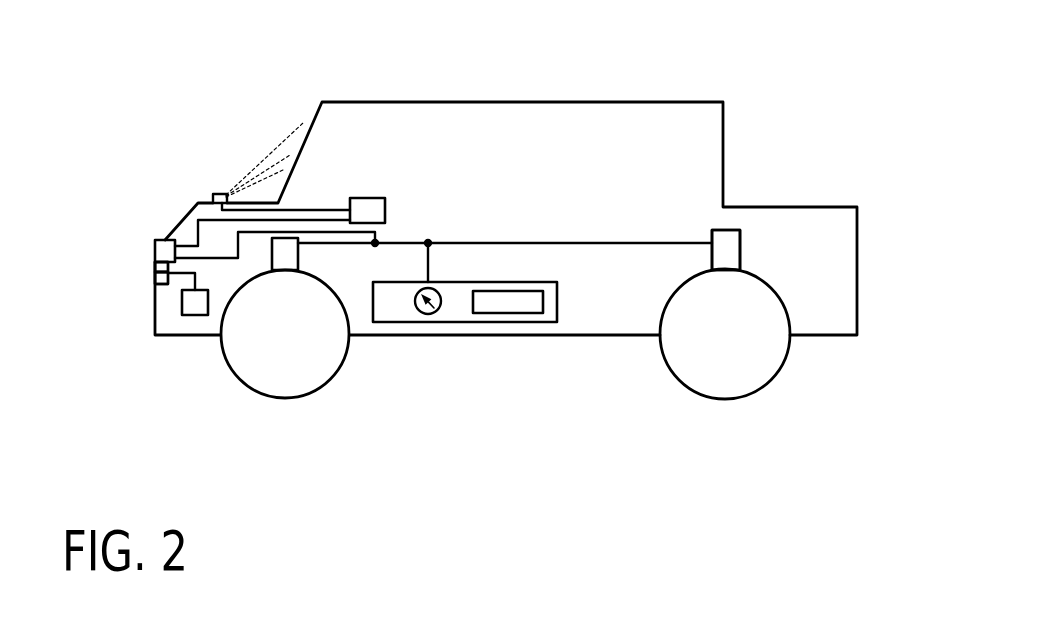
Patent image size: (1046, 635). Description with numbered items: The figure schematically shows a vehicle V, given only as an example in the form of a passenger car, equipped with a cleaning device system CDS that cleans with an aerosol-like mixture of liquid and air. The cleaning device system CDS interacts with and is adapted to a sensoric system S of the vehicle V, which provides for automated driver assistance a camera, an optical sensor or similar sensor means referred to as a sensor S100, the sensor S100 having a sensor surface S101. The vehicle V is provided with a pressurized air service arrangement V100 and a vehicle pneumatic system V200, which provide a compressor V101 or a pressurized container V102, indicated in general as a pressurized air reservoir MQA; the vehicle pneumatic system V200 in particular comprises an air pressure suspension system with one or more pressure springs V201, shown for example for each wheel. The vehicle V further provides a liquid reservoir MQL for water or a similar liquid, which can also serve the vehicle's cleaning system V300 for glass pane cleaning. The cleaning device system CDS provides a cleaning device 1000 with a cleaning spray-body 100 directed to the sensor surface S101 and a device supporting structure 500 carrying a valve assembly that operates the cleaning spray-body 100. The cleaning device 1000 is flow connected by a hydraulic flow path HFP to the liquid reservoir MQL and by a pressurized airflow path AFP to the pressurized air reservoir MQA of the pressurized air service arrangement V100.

The vehicle V is at (829, 50).
The cleaning device system CDS is at (283, 99).
The vehicle's cleaning system V300 is at (210, 175).
The hydraulic flow path HFP is at (196, 224).
The pressurized airflow path AFP is at (332, 231).
The cleaning spray-body 100 is at (153, 250).
The sensoric system S is at (137, 274).
The sensor surface S101 is at (152, 283).
The sensor S100 is at (153, 300).
The device supporting structure 500 is at (192, 316).
The cleaning device 1000 is at (216, 282).
The liquid reservoir MQL is at (387, 212).
The pressurized air service arrangement V100 is at (535, 243).
The vehicle pneumatic system V200 is at (694, 219).
The pressure spring V201 is at (298, 250).
The pressurized air reservoir MQA is at (557, 316).
The compressor V101 is at (432, 315).
The pressurized container V102 is at (515, 305).